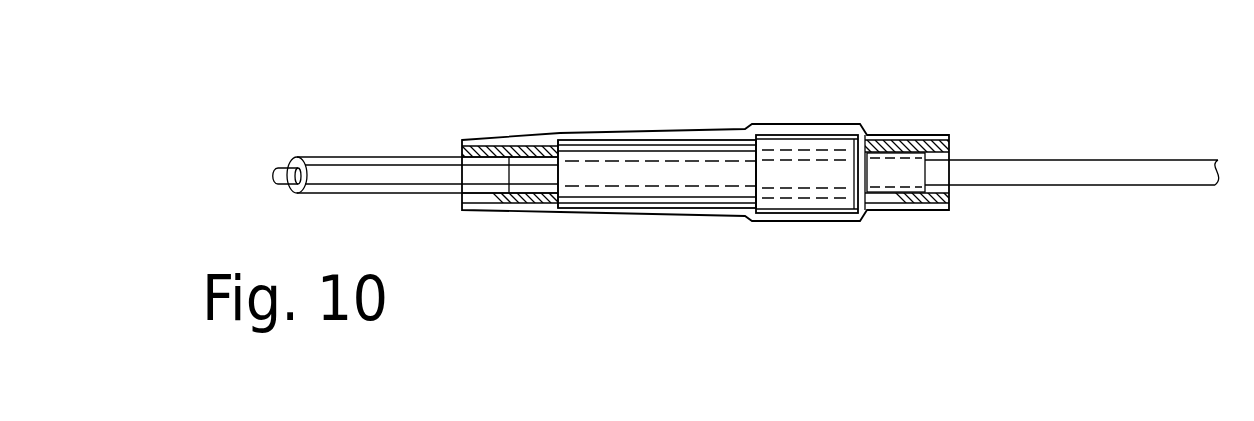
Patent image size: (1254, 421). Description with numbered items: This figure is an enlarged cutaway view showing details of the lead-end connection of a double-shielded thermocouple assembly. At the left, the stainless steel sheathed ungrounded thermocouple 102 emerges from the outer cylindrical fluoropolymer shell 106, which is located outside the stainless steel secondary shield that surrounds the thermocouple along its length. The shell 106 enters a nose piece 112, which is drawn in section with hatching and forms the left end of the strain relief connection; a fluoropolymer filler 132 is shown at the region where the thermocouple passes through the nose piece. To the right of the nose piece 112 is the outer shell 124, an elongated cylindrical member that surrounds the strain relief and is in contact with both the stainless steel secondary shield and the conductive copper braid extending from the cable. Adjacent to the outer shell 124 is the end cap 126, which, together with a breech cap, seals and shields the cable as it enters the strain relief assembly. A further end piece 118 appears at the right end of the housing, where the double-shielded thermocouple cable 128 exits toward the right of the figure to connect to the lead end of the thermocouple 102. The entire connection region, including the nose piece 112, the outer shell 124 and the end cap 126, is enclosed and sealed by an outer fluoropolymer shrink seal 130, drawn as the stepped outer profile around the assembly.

The stainless steel sheathed ungrounded thermocouple 102 is at (282, 165).
The outer cylindrical fluoropolymer shell 106 is at (348, 194).
The nose piece 112 is at (462, 150).
The right end cap 118 is at (950, 145).
The outer shell 124 is at (607, 182).
The end cap 126 is at (835, 180).
The double-shielded thermocouple cable 128 is at (1012, 177).
The outer fluoropolymer shrink seal 130 is at (710, 214).
The fluoropolymer filler 132 is at (530, 187).